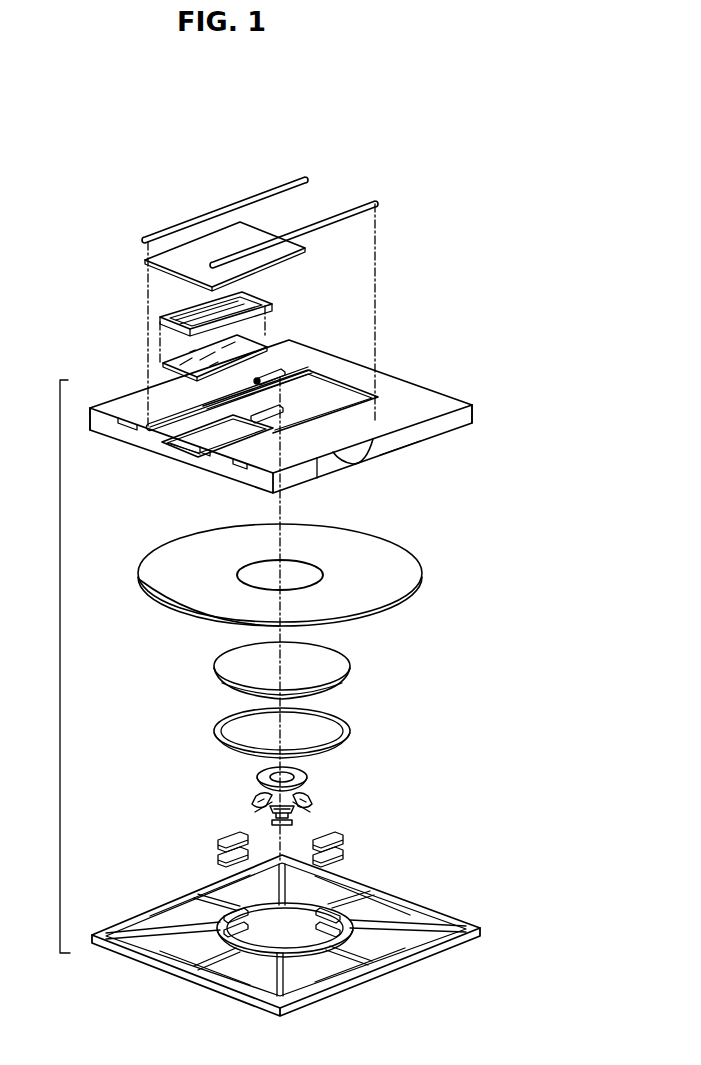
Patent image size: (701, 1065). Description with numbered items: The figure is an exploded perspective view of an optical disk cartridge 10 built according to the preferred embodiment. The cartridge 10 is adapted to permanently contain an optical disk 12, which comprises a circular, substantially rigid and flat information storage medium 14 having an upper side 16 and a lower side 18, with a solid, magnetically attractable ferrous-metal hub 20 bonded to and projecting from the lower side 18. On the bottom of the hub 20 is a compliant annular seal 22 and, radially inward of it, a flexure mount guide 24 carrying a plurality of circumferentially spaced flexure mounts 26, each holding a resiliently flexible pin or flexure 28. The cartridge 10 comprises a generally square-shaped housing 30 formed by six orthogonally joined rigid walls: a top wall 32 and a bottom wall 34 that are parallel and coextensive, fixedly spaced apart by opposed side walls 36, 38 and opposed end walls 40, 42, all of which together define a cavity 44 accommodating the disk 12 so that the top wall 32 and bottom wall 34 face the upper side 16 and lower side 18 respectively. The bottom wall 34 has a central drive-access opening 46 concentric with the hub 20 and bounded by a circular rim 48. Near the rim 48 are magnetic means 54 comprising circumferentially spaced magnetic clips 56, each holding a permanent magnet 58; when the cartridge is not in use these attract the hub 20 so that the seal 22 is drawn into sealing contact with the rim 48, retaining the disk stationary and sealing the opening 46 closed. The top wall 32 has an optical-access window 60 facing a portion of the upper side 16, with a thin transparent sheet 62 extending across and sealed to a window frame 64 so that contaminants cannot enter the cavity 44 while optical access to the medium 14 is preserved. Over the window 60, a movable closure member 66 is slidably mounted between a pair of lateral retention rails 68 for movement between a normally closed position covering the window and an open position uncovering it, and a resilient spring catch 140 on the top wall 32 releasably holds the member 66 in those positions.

The optical disk cartridge 10 is at (517, 215).
The optical disk 12 is at (450, 552).
The information storage medium 14 is at (340, 616).
The upper side 16 is at (360, 538).
The lower side 18 is at (183, 613).
The hub 20 is at (350, 664).
The compliant annular seal 22 is at (351, 733).
The flexure mount guide 24 is at (308, 777).
The flexure mounts 26 is at (306, 803).
The flexure 28 is at (300, 811).
The housing 30 is at (60, 663).
The top wall 32 is at (296, 416).
The bottom wall 34 is at (286, 940).
The side wall 36 is at (89, 418).
The side wall 38 is at (390, 455).
The end wall 40 is at (228, 468).
The end wall 42 is at (474, 415).
The cavity 44 is at (350, 465).
The central drive-access opening 46 is at (263, 938).
The circular rim 48 is at (208, 880).
The magnetic means 54 is at (210, 838).
The magnetic clips 56 is at (343, 862).
The permanent magnet 58 is at (343, 842).
The optical-access window 60 is at (197, 443).
The transparent sheet 62 is at (245, 342).
The window frame 64 is at (255, 297).
The closure member 66 is at (258, 228).
The lateral retention rails 68 is at (358, 201).
The resilient spring catch 140 is at (281, 369).